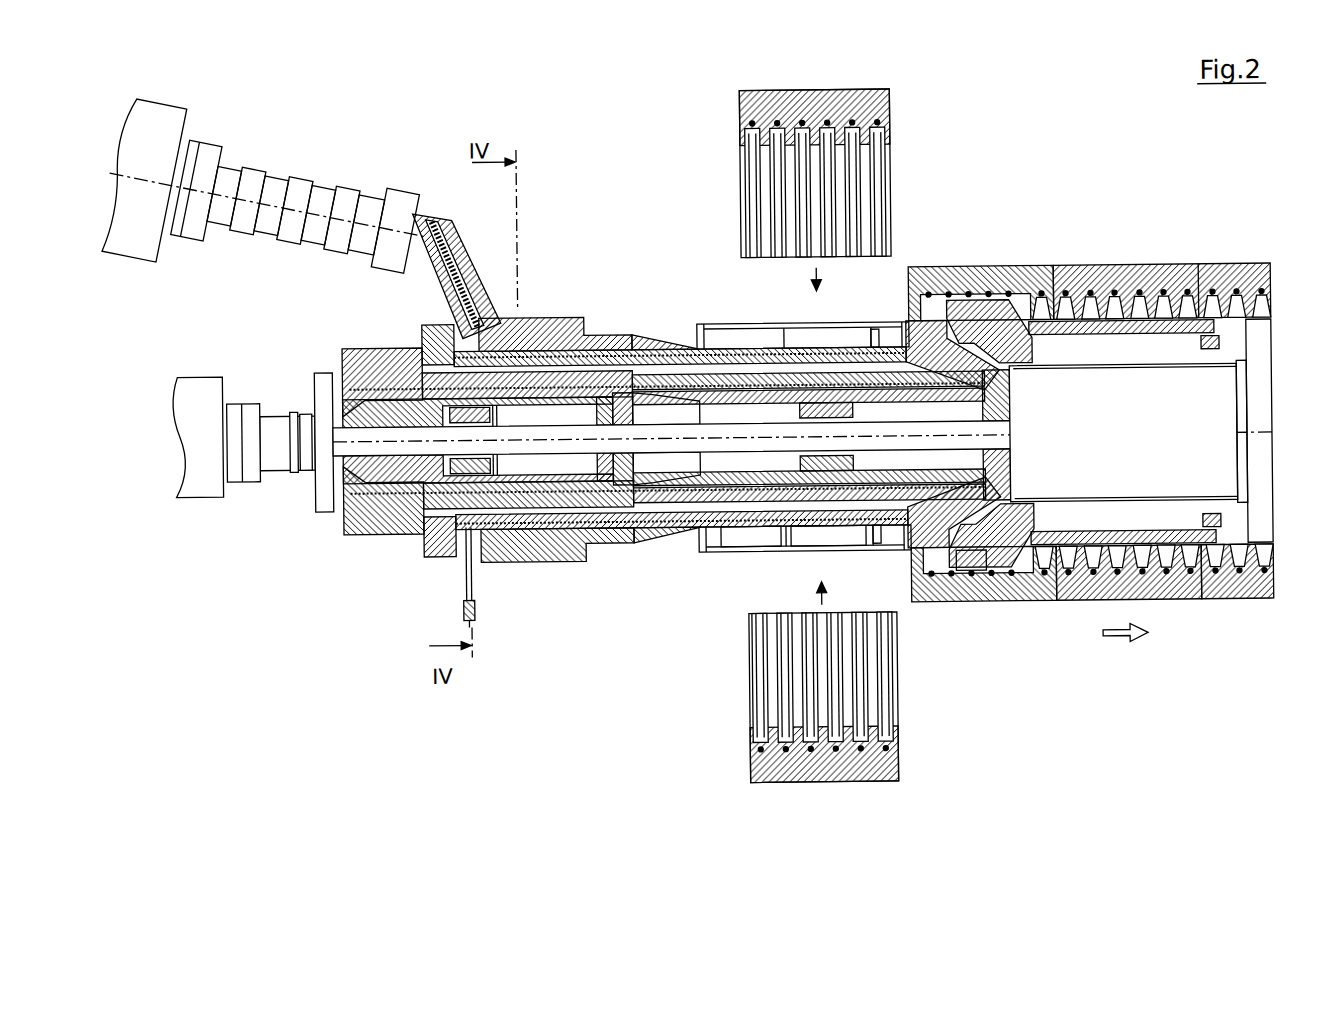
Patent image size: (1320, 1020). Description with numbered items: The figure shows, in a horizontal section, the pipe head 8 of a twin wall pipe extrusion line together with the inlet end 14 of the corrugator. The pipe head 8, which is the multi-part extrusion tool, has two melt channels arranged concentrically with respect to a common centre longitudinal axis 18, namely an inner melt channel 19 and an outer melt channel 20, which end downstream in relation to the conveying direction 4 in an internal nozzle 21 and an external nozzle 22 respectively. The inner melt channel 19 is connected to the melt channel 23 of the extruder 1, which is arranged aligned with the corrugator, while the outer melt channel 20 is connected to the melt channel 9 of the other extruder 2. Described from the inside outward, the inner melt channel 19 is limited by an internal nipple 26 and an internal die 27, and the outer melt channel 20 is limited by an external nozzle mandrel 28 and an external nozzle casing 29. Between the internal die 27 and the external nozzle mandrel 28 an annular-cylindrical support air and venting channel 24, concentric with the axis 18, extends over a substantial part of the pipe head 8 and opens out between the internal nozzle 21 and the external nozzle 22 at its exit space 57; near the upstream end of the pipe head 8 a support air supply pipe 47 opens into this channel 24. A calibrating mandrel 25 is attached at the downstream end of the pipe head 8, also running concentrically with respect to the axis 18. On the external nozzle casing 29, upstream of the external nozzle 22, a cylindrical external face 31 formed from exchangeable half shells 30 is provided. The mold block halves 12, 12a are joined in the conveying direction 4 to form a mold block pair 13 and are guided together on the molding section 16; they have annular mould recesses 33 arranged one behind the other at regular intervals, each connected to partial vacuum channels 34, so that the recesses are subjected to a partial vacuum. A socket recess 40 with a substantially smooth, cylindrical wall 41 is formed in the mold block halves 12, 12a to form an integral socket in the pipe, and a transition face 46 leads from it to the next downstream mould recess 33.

The extruder 1 is at (189, 416).
The other extruder 2 is at (155, 150).
The conveying direction 4 is at (1116, 646).
The pipe head 8 is at (650, 313).
The melt channel 9 is at (474, 274).
The mold block half 12 is at (888, 101).
The mold block half 12a is at (893, 772).
The mold block pair 13 is at (1094, 265).
The inlet end 14 is at (848, 300).
The molding section 16 is at (1220, 604).
The centre longitudinal axis 18 is at (1170, 436).
The inner melt channel 19 is at (552, 557).
The outer melt channel 20 is at (677, 328).
The internal nozzle 21 is at (1020, 603).
The external nozzle 22 is at (962, 602).
The melt channel 23 is at (273, 452).
The support air and venting channel 24 is at (652, 538).
The calibrating mandrel 25 is at (1174, 304).
The internal nipple 26 is at (772, 395).
The internal die 27 is at (542, 434).
The external nozzle mandrel 28 is at (572, 318).
The external nozzle casing 29 is at (746, 524).
The half shells 30 is at (729, 321).
The cylindrical external face 31 is at (792, 550).
The annular mould recesses 33 is at (757, 137).
The partial vacuum channels 34 is at (1015, 302).
The socket recess 40 is at (975, 310).
The cylindrical wall 41 is at (991, 602).
The transition face 46 is at (914, 292).
The support air supply pipe 47 is at (473, 594).
The exit space 57 is at (970, 332).